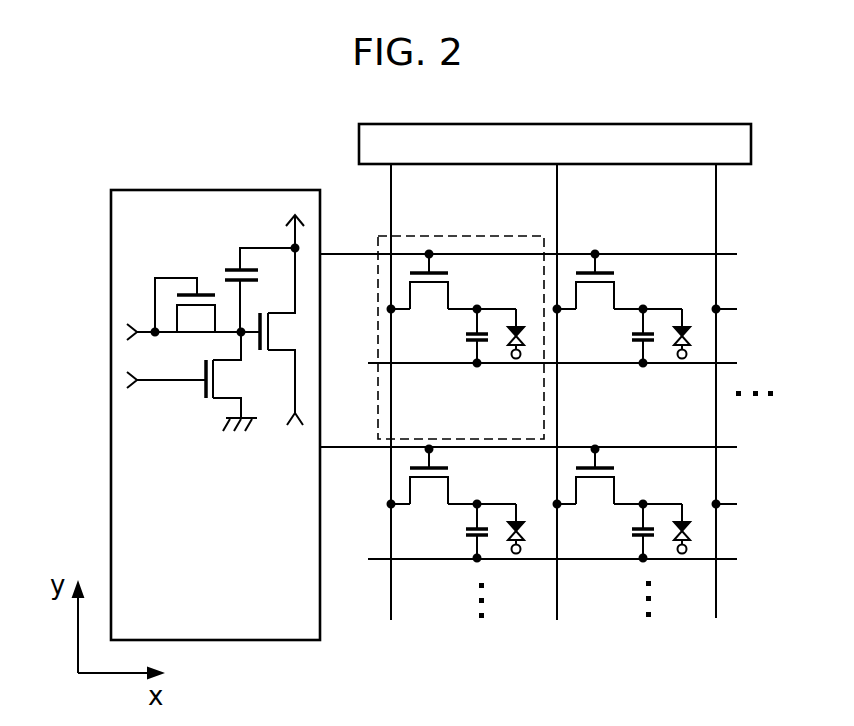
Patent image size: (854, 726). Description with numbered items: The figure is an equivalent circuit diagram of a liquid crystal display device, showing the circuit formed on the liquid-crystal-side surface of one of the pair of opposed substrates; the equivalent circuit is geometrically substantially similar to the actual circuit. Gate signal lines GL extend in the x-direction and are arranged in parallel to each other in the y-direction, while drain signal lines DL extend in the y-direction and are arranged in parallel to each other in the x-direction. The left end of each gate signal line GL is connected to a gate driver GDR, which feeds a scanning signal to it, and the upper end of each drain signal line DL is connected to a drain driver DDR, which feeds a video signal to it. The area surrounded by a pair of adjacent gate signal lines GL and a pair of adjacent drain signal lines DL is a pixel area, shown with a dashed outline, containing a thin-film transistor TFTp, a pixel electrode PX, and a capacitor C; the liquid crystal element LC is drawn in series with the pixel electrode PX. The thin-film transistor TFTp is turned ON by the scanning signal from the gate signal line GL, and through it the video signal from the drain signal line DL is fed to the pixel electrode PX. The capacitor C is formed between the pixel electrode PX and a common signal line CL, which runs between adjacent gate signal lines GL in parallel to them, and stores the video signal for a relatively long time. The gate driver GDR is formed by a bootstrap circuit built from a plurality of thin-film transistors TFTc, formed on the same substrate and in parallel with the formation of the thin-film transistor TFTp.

The gate driver GDR is at (208, 188).
The drain driver DDR is at (754, 141).
The drain signal line DL is at (718, 208).
The gate signal line GL is at (728, 447).
The common signal line CL is at (728, 362).
The pixel electrode PX is at (514, 309).
The thin-film transistor TFTp is at (449, 273).
The capacitor C is at (458, 340).
The liquid crystal element LC is at (508, 340).
The thin-film transistor TFTc is at (210, 413).